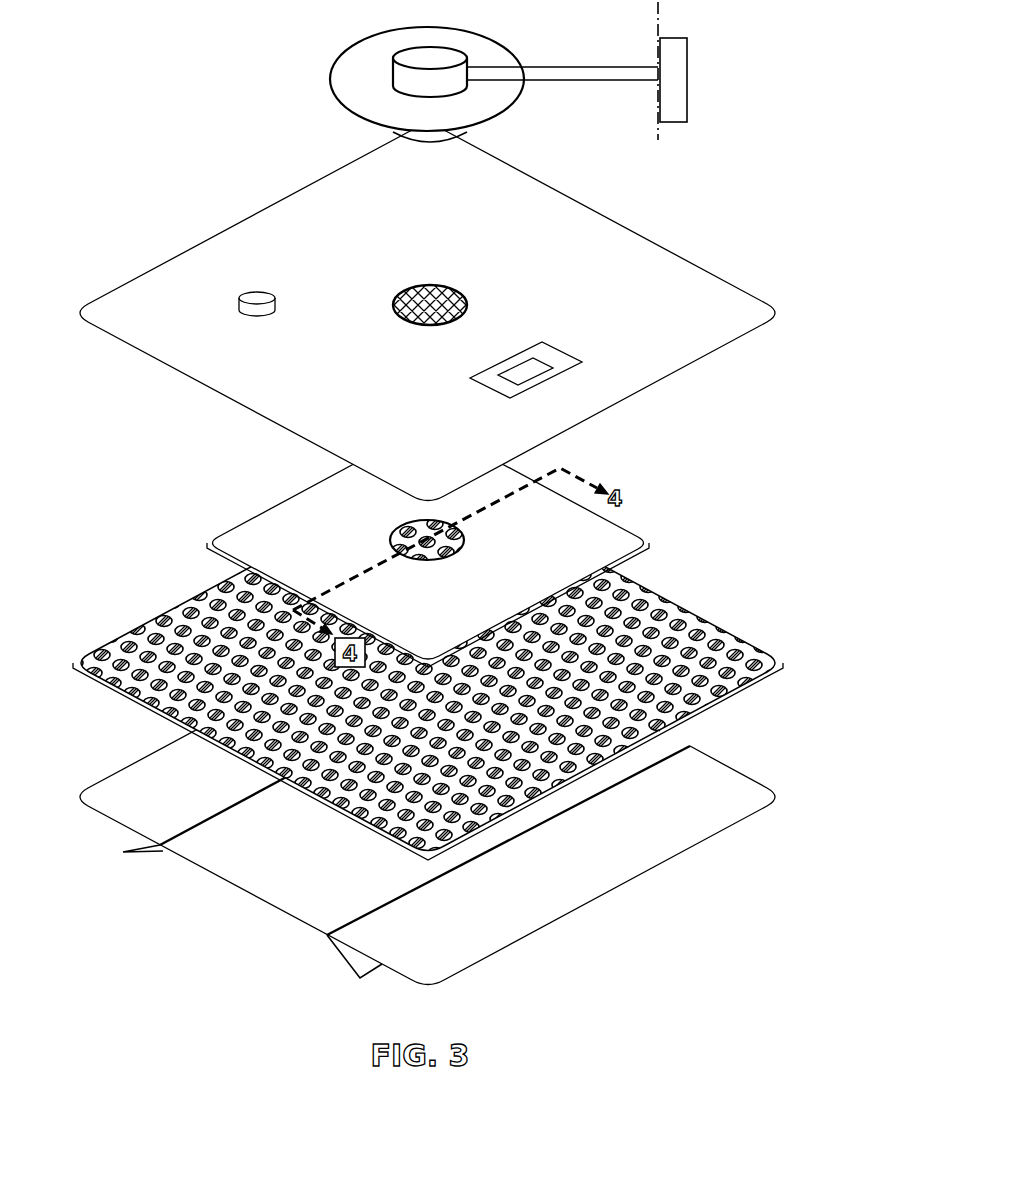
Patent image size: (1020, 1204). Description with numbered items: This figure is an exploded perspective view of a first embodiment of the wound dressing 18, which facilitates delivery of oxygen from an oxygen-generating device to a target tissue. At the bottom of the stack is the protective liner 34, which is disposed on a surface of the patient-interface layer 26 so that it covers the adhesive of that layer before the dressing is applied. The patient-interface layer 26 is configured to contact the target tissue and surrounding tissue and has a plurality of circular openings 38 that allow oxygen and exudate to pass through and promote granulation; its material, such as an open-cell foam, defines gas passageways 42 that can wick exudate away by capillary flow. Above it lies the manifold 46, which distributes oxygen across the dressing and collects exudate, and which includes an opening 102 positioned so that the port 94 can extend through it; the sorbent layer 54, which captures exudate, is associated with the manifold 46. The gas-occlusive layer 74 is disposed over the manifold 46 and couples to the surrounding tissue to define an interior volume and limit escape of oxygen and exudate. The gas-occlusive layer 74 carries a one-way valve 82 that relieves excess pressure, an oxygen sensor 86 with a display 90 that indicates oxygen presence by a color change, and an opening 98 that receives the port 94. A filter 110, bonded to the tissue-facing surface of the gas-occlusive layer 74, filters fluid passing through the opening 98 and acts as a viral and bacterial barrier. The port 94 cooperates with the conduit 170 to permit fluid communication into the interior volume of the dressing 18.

The wound dressing 18 is at (118, 210).
The patient-interface layer 26 is at (112, 637).
The protective liner 34 is at (110, 768).
The openings 38 is at (185, 607).
The gas passageways 42 is at (730, 687).
The manifold 46 is at (217, 530).
The sorbent layer 54 is at (650, 543).
The gas-occlusive layer 74 is at (695, 260).
The valve 82 is at (238, 318).
The oxygen sensor 86 is at (565, 373).
The display 90 is at (553, 367).
The port 94 is at (300, 62).
The opening of gas-occlusive layer 98 is at (458, 297).
The opening of manifold 102 is at (393, 530).
The filter 110 is at (400, 287).
The conduit 170 is at (593, 63).